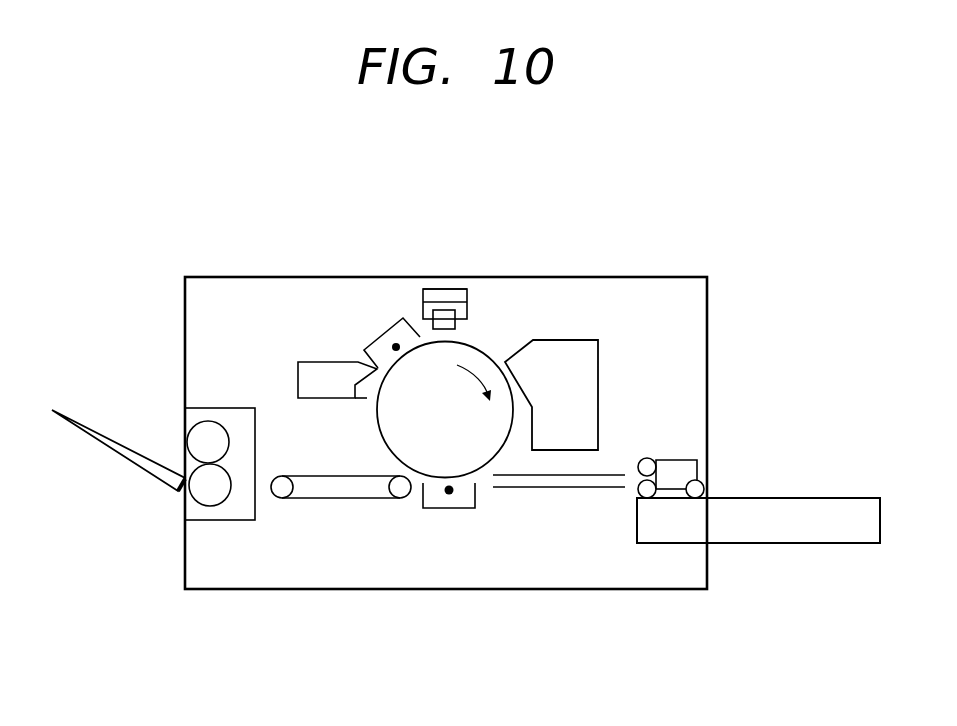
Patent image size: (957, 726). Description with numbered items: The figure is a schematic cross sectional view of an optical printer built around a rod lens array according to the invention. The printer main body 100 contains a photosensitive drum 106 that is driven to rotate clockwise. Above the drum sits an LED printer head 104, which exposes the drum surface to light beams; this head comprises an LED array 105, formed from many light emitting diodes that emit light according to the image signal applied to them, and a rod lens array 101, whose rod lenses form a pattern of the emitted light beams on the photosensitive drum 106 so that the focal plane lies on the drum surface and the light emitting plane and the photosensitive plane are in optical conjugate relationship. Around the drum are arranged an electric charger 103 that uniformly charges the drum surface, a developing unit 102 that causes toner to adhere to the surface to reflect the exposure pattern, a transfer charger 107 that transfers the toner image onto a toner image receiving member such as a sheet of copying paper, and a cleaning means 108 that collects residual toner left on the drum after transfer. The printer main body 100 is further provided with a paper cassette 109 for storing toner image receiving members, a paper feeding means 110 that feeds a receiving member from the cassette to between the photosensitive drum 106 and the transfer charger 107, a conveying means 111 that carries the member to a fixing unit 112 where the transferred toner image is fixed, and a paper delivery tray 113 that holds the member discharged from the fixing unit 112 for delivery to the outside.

The printer main body 100 is at (629, 609).
The rod lens array 101 is at (452, 324).
The developing unit 102 is at (594, 355).
The electric charger 103 is at (392, 335).
The LED printer head 104 is at (464, 306).
The LED array 105 is at (455, 296).
The photosensitive drum 106 is at (392, 435).
The transfer charger 107 is at (449, 494).
The cleaning means 108 is at (338, 367).
The paper cassette 109 is at (755, 545).
The paper feeding means 110 is at (673, 470).
The conveying means 111 is at (337, 498).
The fixing unit 112 is at (208, 497).
The paper delivery tray 113 is at (140, 462).